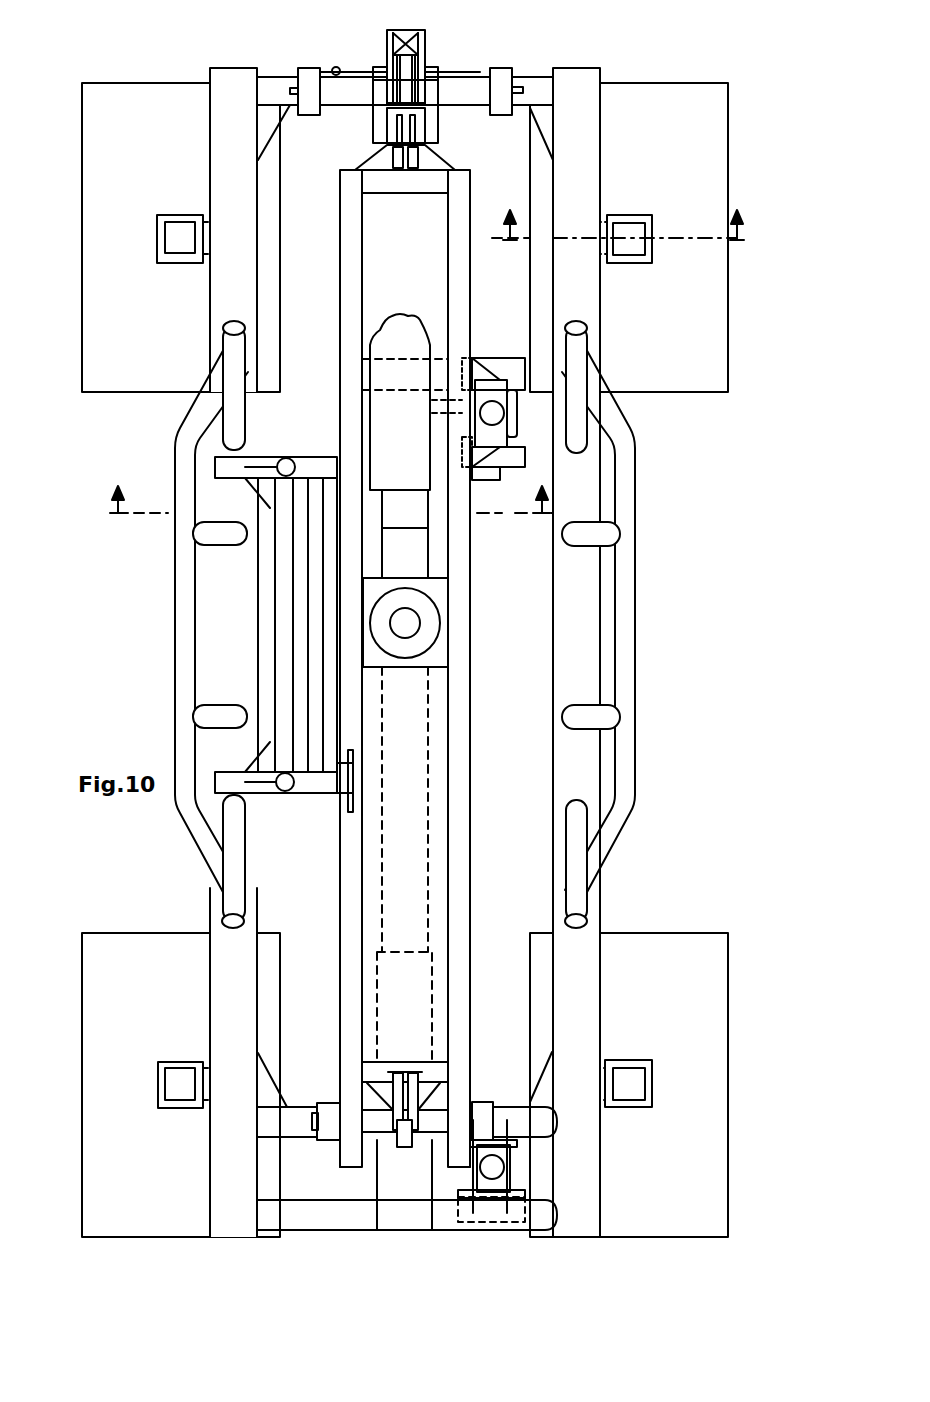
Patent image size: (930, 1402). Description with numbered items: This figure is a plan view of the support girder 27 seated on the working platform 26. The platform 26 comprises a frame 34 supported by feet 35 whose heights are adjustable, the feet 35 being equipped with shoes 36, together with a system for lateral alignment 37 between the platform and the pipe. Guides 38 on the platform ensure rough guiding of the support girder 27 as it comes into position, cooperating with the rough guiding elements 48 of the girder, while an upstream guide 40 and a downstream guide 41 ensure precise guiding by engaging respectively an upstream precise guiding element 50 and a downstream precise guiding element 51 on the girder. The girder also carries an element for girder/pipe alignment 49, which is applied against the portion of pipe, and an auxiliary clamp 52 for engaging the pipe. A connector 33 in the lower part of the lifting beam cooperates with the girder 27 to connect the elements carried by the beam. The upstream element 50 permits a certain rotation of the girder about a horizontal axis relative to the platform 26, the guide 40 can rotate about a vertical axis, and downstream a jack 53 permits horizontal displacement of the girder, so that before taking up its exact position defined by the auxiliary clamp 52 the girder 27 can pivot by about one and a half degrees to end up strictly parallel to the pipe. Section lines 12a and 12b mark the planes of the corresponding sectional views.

The working platform 26 is at (212, 897).
The support girder 27 is at (340, 372).
The connector 33 is at (430, 630).
The frame 34 is at (558, 920).
The feet 35 is at (160, 237).
The shoes 36 is at (131, 393).
The system for lateral alignment 37 is at (505, 1167).
The guides 38 is at (175, 655).
The upstream guide 40 is at (308, 1135).
The downstream guide 41 is at (295, 82).
The rough guiding elements 48 is at (265, 458).
The element for girder/pipe alignment 49 is at (502, 418).
The upstream precise guiding element 50 is at (358, 1155).
The downstream precise guiding element 51 is at (418, 42).
The auxiliary clamp 52 is at (370, 347).
The jack 53 is at (350, 70).
The section line 12a is at (336, 489).
The section line 12b is at (627, 214).